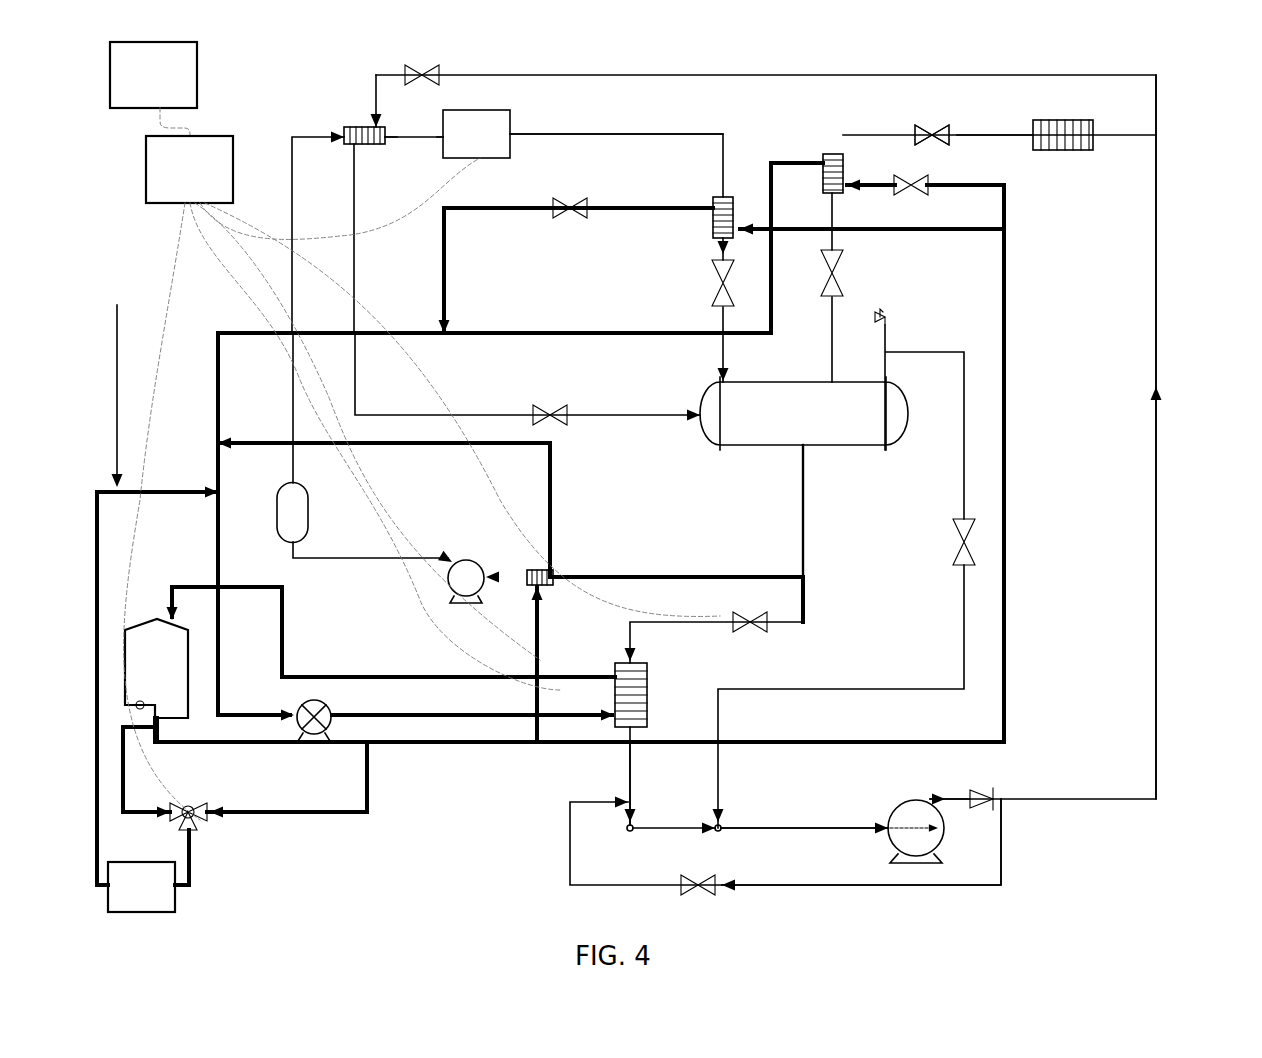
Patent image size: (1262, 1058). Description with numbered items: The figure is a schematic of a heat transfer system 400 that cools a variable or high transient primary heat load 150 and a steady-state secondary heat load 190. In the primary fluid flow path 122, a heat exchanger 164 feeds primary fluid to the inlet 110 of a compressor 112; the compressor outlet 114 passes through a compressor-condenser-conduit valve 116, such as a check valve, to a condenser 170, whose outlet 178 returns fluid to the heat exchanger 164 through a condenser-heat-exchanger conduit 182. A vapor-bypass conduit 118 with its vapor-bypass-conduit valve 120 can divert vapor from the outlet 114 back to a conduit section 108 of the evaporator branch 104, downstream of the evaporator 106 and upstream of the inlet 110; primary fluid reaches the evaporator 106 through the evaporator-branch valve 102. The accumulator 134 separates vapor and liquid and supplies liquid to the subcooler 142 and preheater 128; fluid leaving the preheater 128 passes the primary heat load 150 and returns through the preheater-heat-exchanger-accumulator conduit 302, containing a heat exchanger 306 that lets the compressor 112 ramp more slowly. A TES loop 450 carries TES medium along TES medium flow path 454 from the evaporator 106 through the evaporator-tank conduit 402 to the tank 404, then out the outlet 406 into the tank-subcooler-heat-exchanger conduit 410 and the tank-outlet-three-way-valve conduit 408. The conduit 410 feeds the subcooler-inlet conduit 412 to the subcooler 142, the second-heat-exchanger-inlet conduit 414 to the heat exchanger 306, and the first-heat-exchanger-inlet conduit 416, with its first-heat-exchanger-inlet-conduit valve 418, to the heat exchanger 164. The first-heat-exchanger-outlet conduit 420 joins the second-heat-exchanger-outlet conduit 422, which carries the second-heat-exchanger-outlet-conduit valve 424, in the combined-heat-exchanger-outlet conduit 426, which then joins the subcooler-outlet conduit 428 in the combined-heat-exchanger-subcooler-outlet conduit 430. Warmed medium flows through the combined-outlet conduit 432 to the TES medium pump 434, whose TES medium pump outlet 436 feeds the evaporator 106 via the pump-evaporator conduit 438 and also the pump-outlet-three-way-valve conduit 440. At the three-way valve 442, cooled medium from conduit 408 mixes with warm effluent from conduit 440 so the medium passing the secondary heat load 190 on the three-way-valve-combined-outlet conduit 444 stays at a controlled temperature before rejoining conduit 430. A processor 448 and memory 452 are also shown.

The evaporator-branch valve 102 is at (762, 626).
The evaporator branch 104 is at (810, 598).
The evaporator 106 is at (648, 674).
The conduit section 108 is at (638, 770).
The inlet 110 is at (770, 826).
The compressor 112 is at (905, 803).
The outlet 114 is at (957, 796).
The compressor-condenser-conduit valve 116 is at (992, 790).
The vapor-bypass conduit 118 is at (1010, 869).
The vapor-bypass-conduit valve 120 is at (724, 883).
The primary fluid flow path 122 is at (414, 133).
The preheater 128 is at (348, 125).
The accumulator 134 is at (744, 448).
The subcooler 142 is at (536, 568).
The primary heat load 150 is at (476, 134).
The heat exchanger 164 is at (825, 153).
The condenser 170 is at (1085, 120).
The outlet 178 is at (1033, 120).
The condenser-heat-exchanger conduit 182 is at (967, 130).
The secondary heat load 190 is at (141, 887).
The preheater-heat-exchanger-accumulator conduit 302 is at (602, 137).
The heat exchanger 306 is at (713, 227).
The heat transfer system 400 is at (1168, 783).
The evaporator-tank conduit 402 is at (290, 631).
The tank 404 is at (140, 618).
The outlet 406 is at (169, 722).
The tank-outlet-three-way-valve conduit 408 is at (140, 740).
The tank-subcooler-heat-exchanger conduit 410 is at (1012, 265).
The subcooler-inlet conduit 412 is at (544, 636).
The second-heat-exchanger-inlet conduit 414 is at (926, 240).
The first-heat-exchanger-inlet conduit 416 is at (1012, 201).
The first-heat-exchanger-inlet-conduit valve 418 is at (927, 183).
The first-heat-exchanger-outlet conduit 420 is at (586, 326).
The second-heat-exchanger-outlet conduit 422 is at (496, 215).
The second-heat-exchanger-outlet-conduit valve 424 is at (573, 205).
The combined-heat-exchanger-outlet conduit 426 is at (238, 326).
The subcooler-outlet conduit 428 is at (558, 486).
The combined-heat-exchanger-subcooler-outlet conduit 430 is at (212, 468).
The combined-outlet conduit 432 is at (226, 531).
The TES medium pump 434 is at (298, 706).
The TES medium pump outlet 436 is at (343, 711).
The pump-evaporator conduit 438 is at (462, 712).
The pump-outlet-three-way-valve conduit 440 is at (310, 819).
The three-way valve 442 is at (197, 820).
The three-way-valve-combined-outlet conduit 444 is at (116, 383).
The processor 448 is at (189, 169).
The TES loop 450 is at (1012, 413).
The memory 452 is at (153, 89).
The TES medium flow path 454 is at (384, 443).